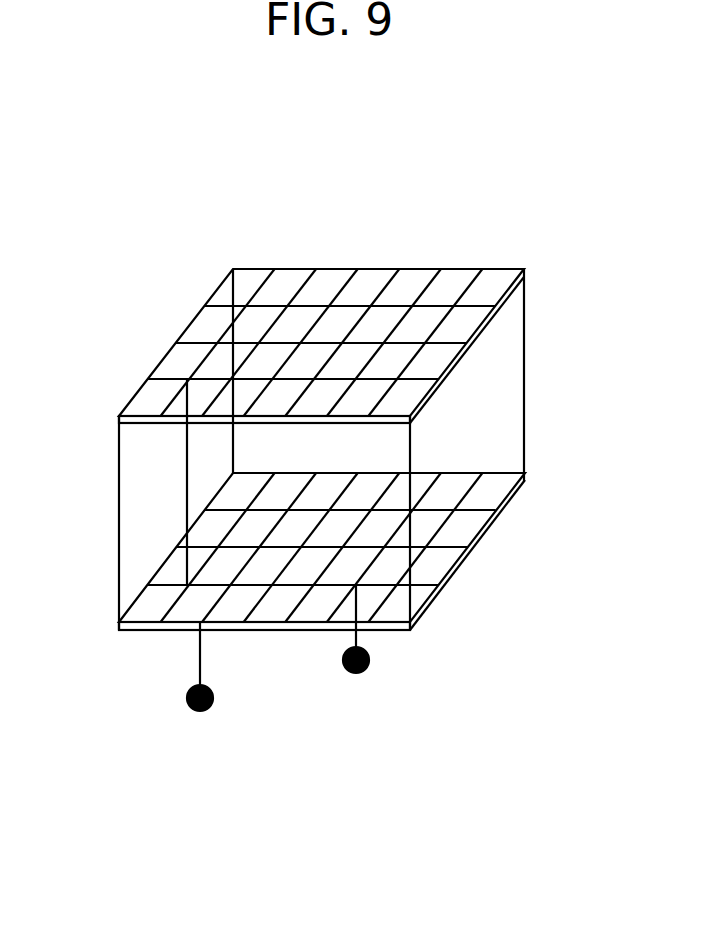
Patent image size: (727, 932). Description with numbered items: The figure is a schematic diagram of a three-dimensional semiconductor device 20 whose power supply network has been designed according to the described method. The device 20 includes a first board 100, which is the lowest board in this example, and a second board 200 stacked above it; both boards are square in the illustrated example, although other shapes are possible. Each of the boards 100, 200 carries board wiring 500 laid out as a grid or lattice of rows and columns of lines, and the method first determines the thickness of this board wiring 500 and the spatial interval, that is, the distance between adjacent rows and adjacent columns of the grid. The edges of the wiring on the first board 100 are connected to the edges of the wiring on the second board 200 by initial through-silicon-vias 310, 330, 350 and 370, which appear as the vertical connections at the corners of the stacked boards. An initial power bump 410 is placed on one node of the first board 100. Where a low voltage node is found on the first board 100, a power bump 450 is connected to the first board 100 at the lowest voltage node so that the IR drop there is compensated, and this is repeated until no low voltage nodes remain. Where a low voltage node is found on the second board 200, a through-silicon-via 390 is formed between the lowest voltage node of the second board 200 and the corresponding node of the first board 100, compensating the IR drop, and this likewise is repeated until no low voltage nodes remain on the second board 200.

The semiconductor device 20 is at (298, 158).
The first board 100 is at (119, 622).
The second board 200 is at (119, 418).
The initial through-silicon-via 310 is at (119, 517).
The initial through-silicon-via 330 is at (412, 599).
The initial through-silicon-via 350 is at (526, 374).
The initial through-silicon-via 370 is at (232, 284).
The through-silicon-via 390 is at (185, 466).
The initial power bump 410 is at (355, 673).
The power bump 450 is at (199, 711).
The board wiring 500 is at (340, 343).